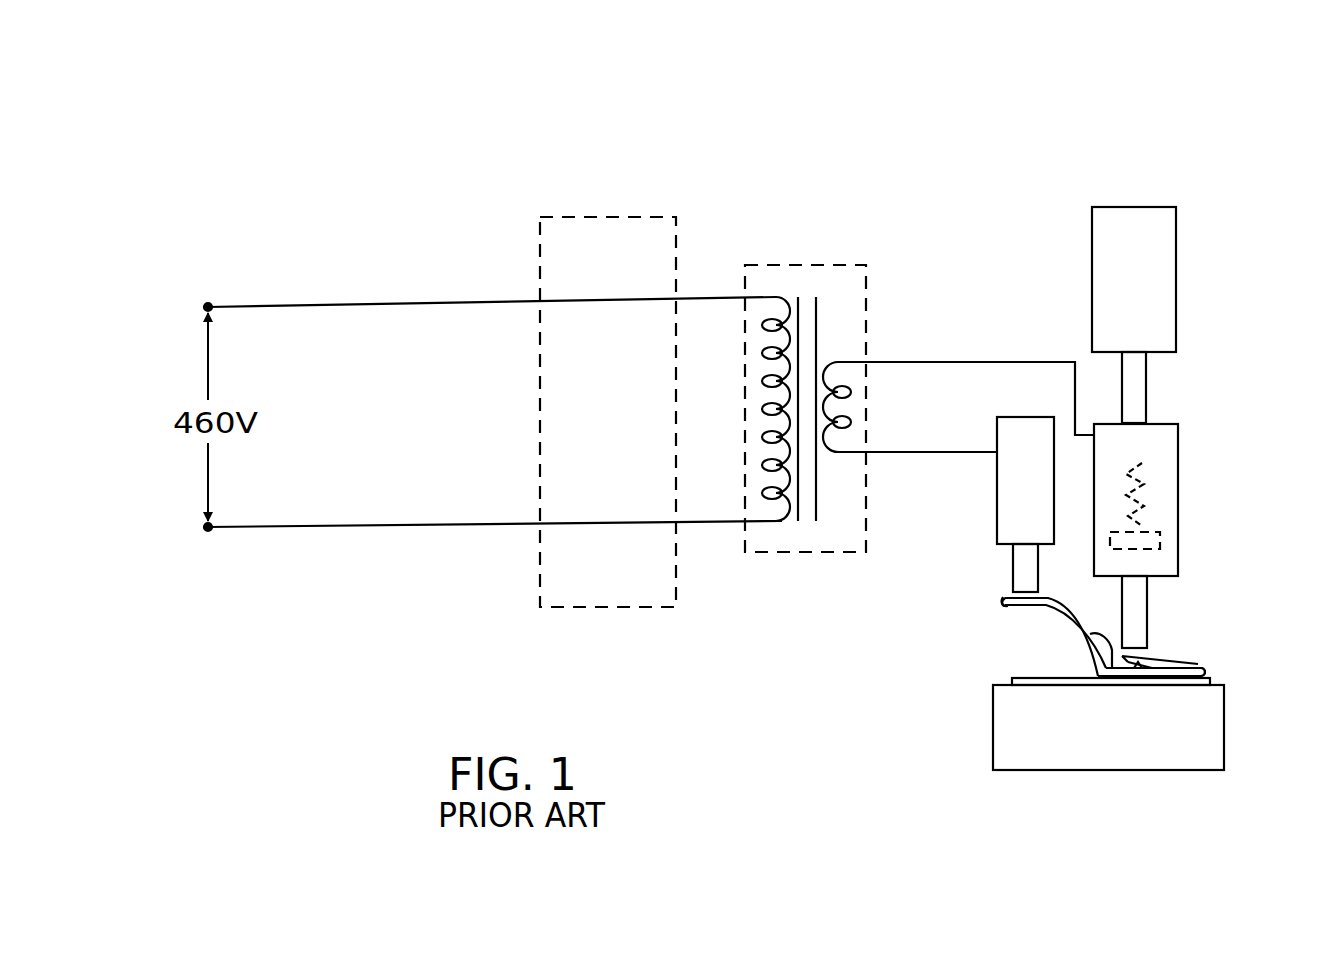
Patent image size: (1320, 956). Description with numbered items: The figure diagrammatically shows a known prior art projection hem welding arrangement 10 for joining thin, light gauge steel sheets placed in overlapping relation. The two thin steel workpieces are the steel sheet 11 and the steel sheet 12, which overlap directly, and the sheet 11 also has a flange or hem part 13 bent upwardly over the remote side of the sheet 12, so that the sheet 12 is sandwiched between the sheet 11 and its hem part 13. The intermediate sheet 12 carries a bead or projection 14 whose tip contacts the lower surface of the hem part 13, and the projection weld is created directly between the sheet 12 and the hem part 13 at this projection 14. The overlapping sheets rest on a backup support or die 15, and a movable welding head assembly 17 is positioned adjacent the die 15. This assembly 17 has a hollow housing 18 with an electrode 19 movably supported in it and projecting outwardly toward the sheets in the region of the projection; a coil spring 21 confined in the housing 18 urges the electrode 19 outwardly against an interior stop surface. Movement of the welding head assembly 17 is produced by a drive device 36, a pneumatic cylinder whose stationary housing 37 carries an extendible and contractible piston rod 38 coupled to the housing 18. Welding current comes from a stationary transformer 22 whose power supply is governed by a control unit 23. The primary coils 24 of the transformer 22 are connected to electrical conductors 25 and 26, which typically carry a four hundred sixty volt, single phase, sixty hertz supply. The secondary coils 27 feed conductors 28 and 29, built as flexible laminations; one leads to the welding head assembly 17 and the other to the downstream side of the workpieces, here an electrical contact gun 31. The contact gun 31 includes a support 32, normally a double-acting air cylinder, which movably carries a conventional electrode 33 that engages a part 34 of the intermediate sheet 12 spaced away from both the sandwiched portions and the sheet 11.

The welding arrangement 10 is at (838, 160).
The steel sheet 11 is at (1015, 670).
The steel sheet 12 is at (1092, 634).
The hem part 13 is at (1197, 667).
The projection 14 is at (1148, 660).
The die 15 is at (1200, 760).
The movable welding head assembly 17 is at (1182, 488).
The housing 18 is at (1163, 452).
The electrode 19 is at (1150, 592).
The spring 21 is at (1150, 518).
The transformer 22 is at (777, 272).
The control unit 23 is at (575, 217).
The primary coils 24 is at (785, 525).
The conductor 25 is at (258, 306).
The conductor 26 is at (257, 526).
The secondary coils 27 is at (840, 380).
The conductor 28 is at (980, 362).
The conductor 29 is at (917, 452).
The electrical contact gun 31 is at (971, 530).
The support 32 is at (1010, 476).
The electrode 33 is at (1022, 556).
The part of the intermediate sheet 34 is at (1015, 604).
The drive device 36 is at (1190, 276).
The housing 37 is at (1124, 225).
The piston rod 38 is at (1140, 380).